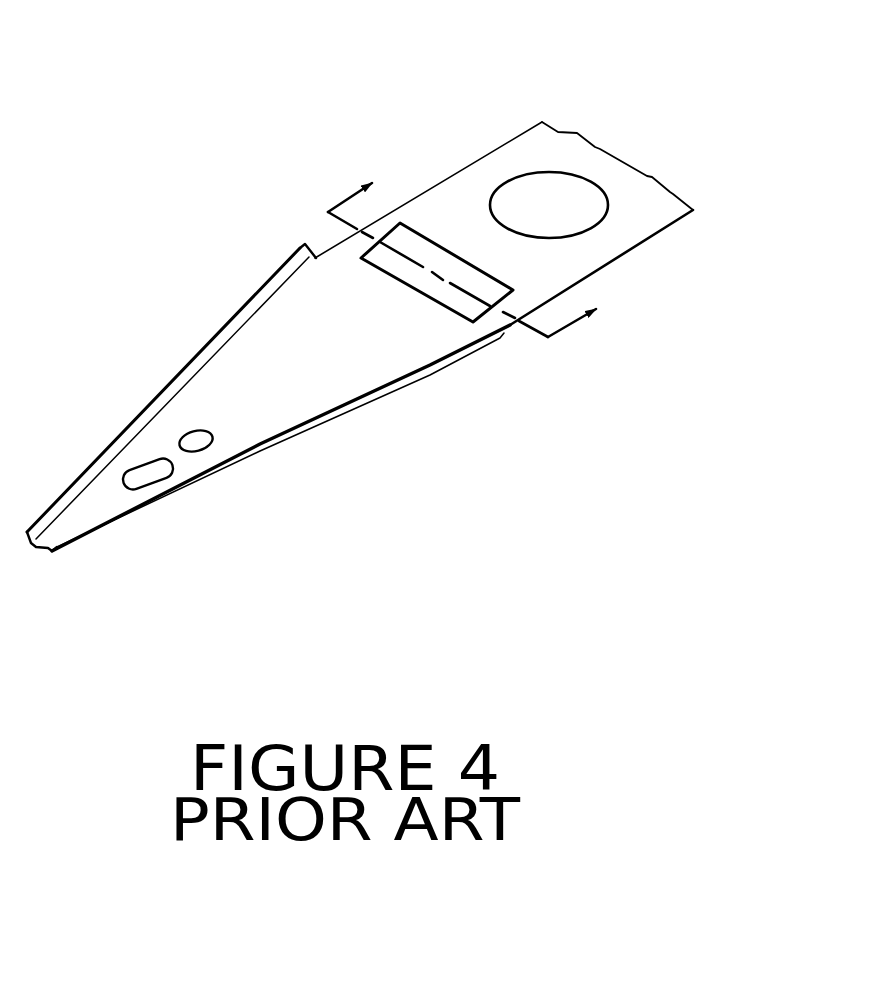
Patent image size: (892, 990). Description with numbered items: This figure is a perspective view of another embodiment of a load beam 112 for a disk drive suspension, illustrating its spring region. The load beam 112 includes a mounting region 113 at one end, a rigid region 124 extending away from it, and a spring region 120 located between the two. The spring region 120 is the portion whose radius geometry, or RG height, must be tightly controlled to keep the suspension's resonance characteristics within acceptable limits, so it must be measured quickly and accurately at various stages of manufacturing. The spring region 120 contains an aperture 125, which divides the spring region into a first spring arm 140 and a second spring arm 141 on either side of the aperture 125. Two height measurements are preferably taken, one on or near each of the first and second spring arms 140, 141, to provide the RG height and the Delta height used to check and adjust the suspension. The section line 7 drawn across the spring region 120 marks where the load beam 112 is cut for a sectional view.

The head suspension assembly 112 is at (562, 81).
The base plate 113 is at (517, 251).
The load beam 120 is at (270, 322).
The load beam edge rail 124 is at (257, 410).
The rectangular raised region 125 is at (413, 245).
The first edge of region 140 is at (511, 328).
The second edge of region 141 is at (378, 226).
The section line 7- 7 is at (472, 250).